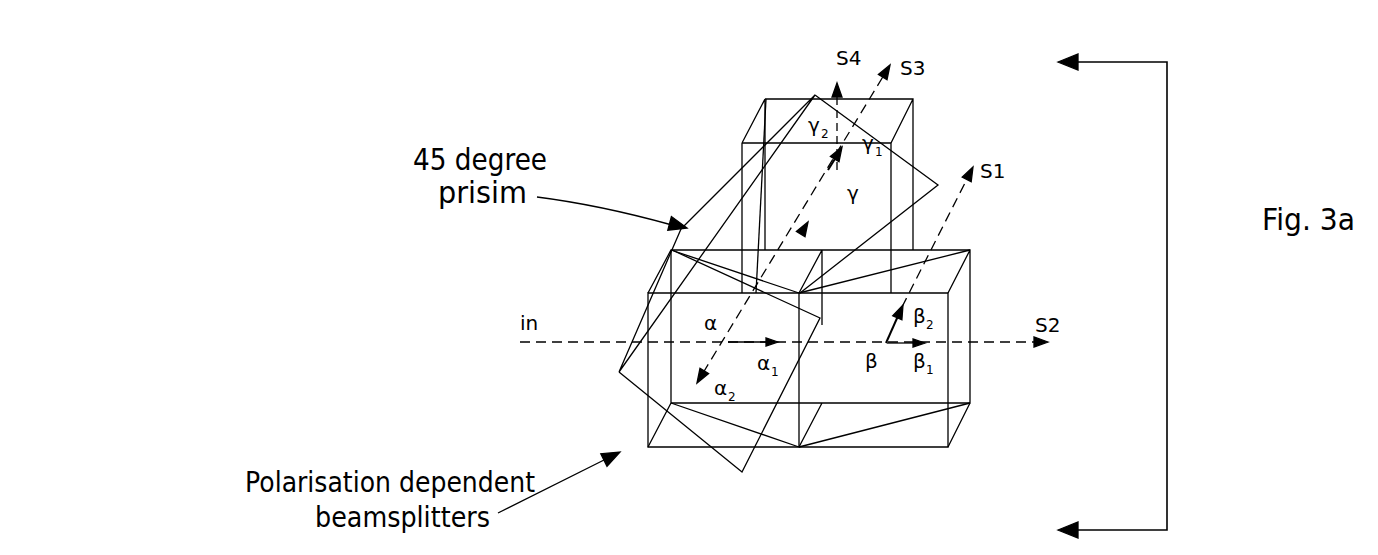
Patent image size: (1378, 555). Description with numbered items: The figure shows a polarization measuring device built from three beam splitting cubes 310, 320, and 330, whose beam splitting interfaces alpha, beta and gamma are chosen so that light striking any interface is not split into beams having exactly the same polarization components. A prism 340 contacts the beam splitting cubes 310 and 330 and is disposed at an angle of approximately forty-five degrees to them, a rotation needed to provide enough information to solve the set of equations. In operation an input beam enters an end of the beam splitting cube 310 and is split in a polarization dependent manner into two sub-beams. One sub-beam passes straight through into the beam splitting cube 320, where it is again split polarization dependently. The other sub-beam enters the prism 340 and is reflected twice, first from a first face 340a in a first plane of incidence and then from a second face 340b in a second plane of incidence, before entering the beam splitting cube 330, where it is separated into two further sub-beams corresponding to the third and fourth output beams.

The beam splitting cube 310 is at (658, 447).
The beam splitting cube 320 is at (972, 285).
The beam splitting cube 330 is at (910, 93).
The prism 340 is at (700, 197).
The first face 340a is at (635, 372).
The second face 340b is at (932, 180).